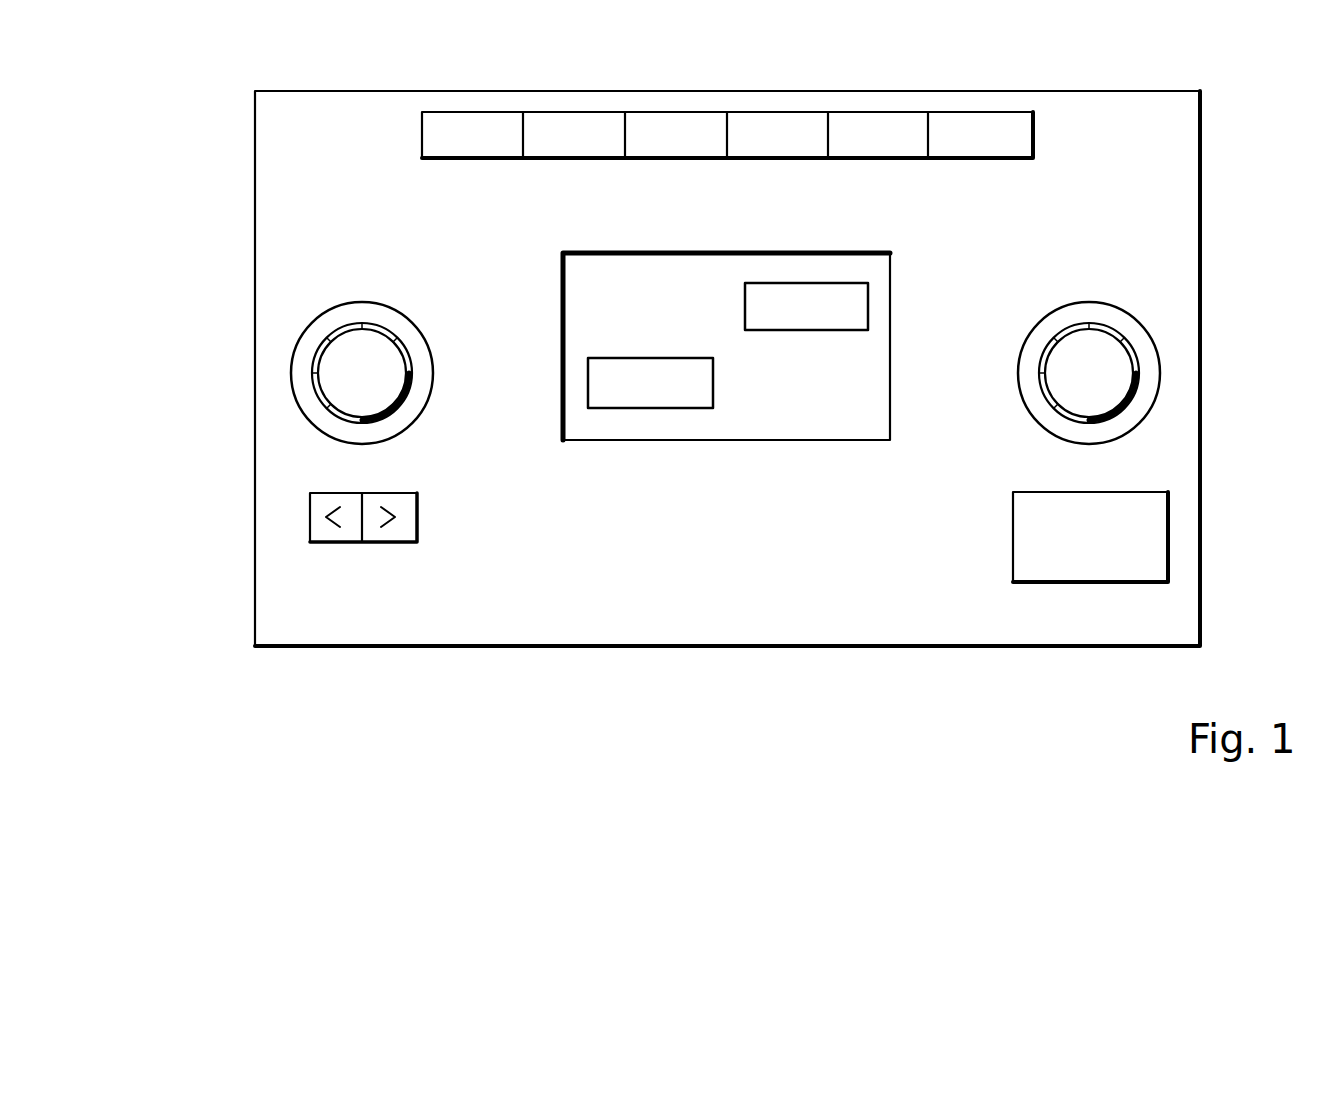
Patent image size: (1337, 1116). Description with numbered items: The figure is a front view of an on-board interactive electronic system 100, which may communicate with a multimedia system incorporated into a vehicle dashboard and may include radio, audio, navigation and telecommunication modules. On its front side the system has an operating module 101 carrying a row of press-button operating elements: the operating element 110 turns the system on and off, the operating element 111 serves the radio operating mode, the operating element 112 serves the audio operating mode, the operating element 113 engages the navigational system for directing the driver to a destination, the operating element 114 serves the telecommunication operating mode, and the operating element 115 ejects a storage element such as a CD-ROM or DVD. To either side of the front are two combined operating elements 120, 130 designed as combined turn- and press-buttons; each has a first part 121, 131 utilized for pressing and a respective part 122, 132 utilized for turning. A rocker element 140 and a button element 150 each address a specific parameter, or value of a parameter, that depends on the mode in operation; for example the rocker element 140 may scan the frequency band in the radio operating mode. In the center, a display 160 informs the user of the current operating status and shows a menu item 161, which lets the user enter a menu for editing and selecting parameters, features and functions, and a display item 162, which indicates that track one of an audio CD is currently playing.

The on-board interactive electronic system 100 is at (710, 451).
The operating module 101 is at (268, 602).
The operating element 110 is at (468, 120).
The operating element 111 is at (572, 120).
The operating element 112 is at (672, 120).
The operating element 113 is at (772, 120).
The operating element 114 is at (873, 120).
The operating element 115 is at (975, 120).
The combined operating element 120 is at (294, 351).
The first part 121 is at (335, 390).
The part 122 is at (310, 342).
The combined operating element 130 is at (1143, 368).
The first part 131 is at (1110, 393).
The part 132 is at (1107, 317).
The rocker element 140 is at (397, 542).
The button element 150 is at (1158, 542).
The display 160 is at (725, 386).
The menu item 161 is at (862, 307).
The display item 162 is at (597, 383).